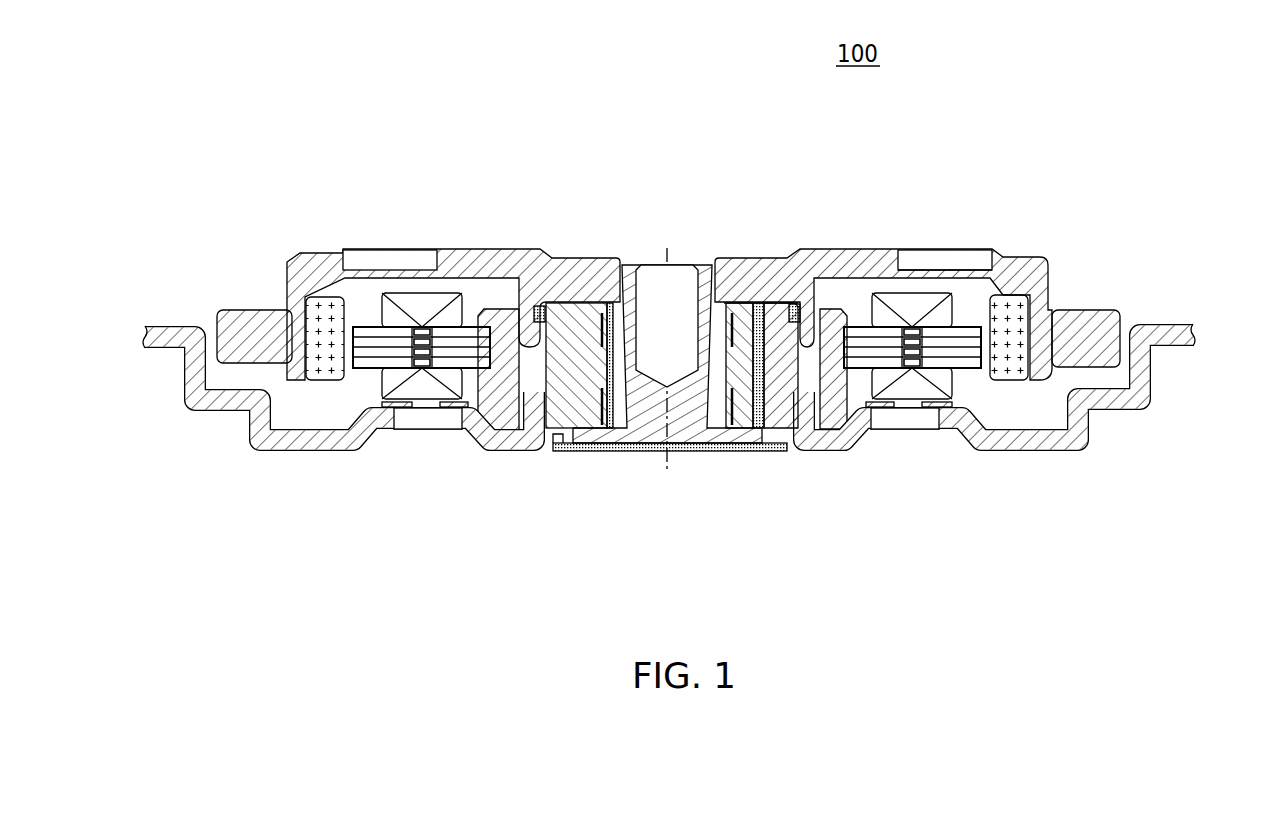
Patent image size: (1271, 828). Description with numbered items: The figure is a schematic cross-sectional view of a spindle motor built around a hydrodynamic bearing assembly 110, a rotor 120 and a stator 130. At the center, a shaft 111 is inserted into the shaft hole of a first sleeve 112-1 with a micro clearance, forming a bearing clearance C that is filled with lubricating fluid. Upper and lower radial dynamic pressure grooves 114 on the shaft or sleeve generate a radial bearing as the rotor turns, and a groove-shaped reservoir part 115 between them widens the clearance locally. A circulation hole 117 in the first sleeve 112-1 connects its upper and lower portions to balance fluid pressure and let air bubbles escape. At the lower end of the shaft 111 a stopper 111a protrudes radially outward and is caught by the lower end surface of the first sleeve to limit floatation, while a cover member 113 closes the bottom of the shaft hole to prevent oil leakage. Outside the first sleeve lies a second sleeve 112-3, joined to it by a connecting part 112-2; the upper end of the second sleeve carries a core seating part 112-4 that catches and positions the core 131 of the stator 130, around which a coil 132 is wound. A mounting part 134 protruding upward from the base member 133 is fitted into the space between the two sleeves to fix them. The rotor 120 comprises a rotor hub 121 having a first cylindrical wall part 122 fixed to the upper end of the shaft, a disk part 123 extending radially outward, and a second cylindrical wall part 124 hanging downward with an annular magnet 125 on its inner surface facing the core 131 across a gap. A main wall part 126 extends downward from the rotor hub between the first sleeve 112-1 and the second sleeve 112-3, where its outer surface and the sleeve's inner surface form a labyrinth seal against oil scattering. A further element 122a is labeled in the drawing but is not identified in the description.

The hydrodynamic bearing assembly 110 is at (669, 402).
The shaft 111 is at (650, 445).
The stopper 111a is at (602, 445).
The first sleeve 112-1 is at (772, 440).
The connecting part 112-2 is at (798, 440).
The second sleeve 112-3 is at (848, 438).
The core seating part 112-4 is at (936, 262).
The cover member 113 is at (697, 445).
The radial dynamic pressure groove 114 is at (732, 262).
The reservoir part 115 is at (668, 262).
The circulation hole 117 is at (789, 258).
The rotor 120 is at (669, 271).
The rotor hub 121 is at (418, 271).
The first cylindrical wall part 122 is at (590, 258).
The housing flange 122a is at (555, 438).
The disk part 123 is at (444, 256).
The second cylindrical wall part 124 is at (340, 289).
The magnet 125 is at (1022, 312).
The main wall part 126 is at (861, 262).
The stator 130 is at (640, 421).
The core 131 is at (365, 375).
The coil 132 is at (428, 382).
The base member 133 is at (478, 420).
The mounting part 134 is at (662, 411).
The bearing clearance C is at (621, 258).